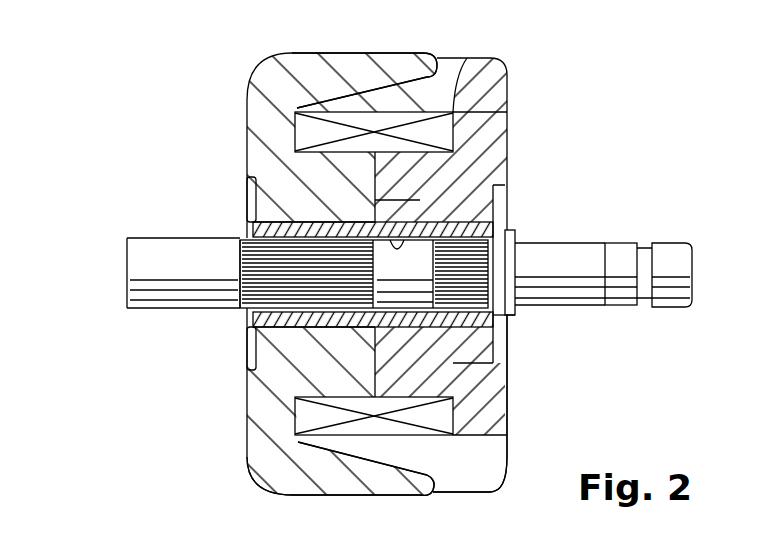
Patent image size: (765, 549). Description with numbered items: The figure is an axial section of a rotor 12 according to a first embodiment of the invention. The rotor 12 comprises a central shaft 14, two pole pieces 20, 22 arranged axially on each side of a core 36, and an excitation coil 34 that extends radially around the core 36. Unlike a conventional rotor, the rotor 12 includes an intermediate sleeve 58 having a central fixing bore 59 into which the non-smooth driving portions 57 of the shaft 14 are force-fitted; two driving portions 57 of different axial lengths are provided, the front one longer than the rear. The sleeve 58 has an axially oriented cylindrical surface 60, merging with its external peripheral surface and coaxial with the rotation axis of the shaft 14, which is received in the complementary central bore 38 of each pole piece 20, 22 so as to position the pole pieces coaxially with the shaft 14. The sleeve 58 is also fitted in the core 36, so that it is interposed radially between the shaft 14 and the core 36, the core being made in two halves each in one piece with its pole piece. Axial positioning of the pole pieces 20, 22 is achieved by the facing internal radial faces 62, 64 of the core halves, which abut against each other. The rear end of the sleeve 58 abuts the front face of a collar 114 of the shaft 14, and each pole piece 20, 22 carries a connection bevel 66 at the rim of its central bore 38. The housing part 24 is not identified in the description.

The rotor 12 is at (146, 173).
The central shaft 14 is at (156, 311).
The front pole piece 20 is at (241, 175).
The rear pole piece 22 is at (513, 388).
The housing wall 24 is at (260, 445).
The excitation coil 34 is at (433, 136).
The core 36 is at (393, 162).
The central fixing bore 38 is at (253, 228).
The driving portion 57 is at (222, 272).
The intermediate sleeve 58 is at (305, 330).
The central fixing bore 59 is at (497, 183).
The cylindrical surface 60 is at (325, 222).
The internal radial face 62 is at (483, 155).
The internal radial face 64 is at (375, 220).
The connection bevel 66 is at (253, 327).
The collar 114 is at (505, 315).